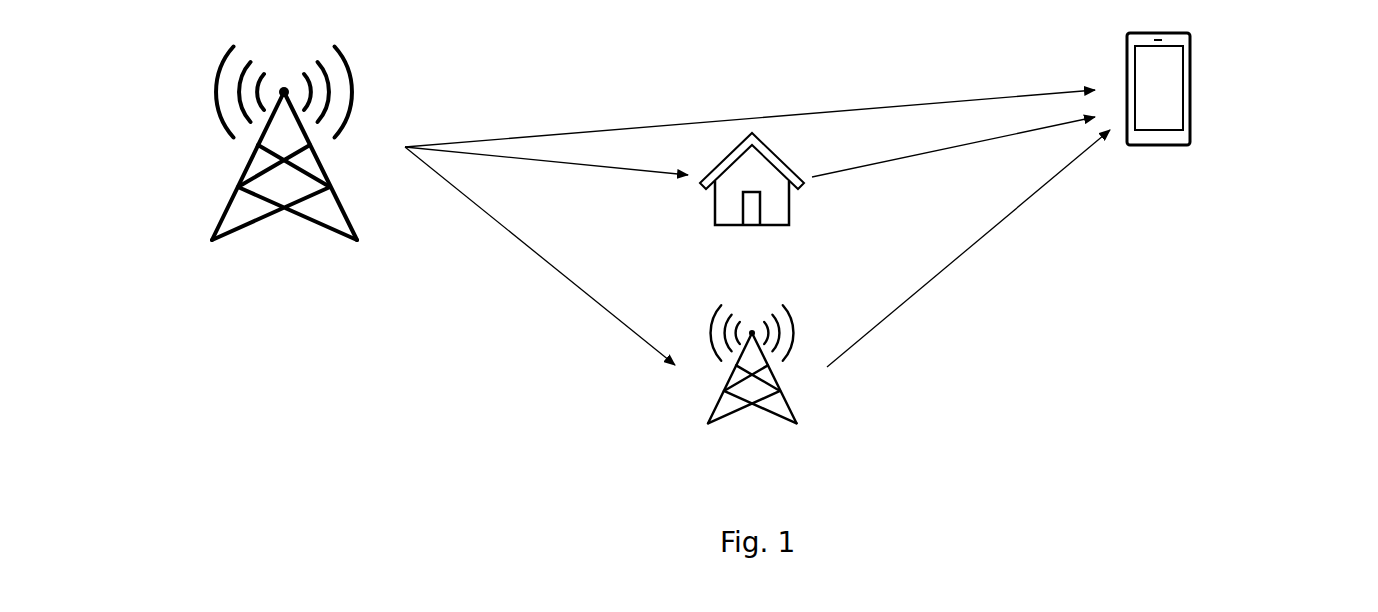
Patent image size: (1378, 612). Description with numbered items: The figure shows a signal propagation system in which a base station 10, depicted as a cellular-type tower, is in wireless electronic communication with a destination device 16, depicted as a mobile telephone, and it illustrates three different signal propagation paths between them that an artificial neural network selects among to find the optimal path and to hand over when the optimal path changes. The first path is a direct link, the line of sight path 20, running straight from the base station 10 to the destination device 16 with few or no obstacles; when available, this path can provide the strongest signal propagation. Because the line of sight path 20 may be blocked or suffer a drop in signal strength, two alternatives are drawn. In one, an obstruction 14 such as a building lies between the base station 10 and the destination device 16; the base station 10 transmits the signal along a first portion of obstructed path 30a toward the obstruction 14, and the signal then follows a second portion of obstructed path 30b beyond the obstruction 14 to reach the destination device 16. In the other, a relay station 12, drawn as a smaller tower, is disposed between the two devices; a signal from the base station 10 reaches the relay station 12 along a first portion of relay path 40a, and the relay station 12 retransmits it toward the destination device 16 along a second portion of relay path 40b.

The base station 10 is at (243, 173).
The relay station 12 is at (708, 415).
The obstruction 14 is at (790, 202).
The destination device 16 is at (1192, 92).
The line of sight path 20 is at (750, 118).
The first portion of obstructed path 30a is at (546, 161).
The second portion of obstructed path 30b is at (953, 147).
The first portion of relay path 40a is at (540, 256).
The second portion of relay path 40b is at (968, 248).